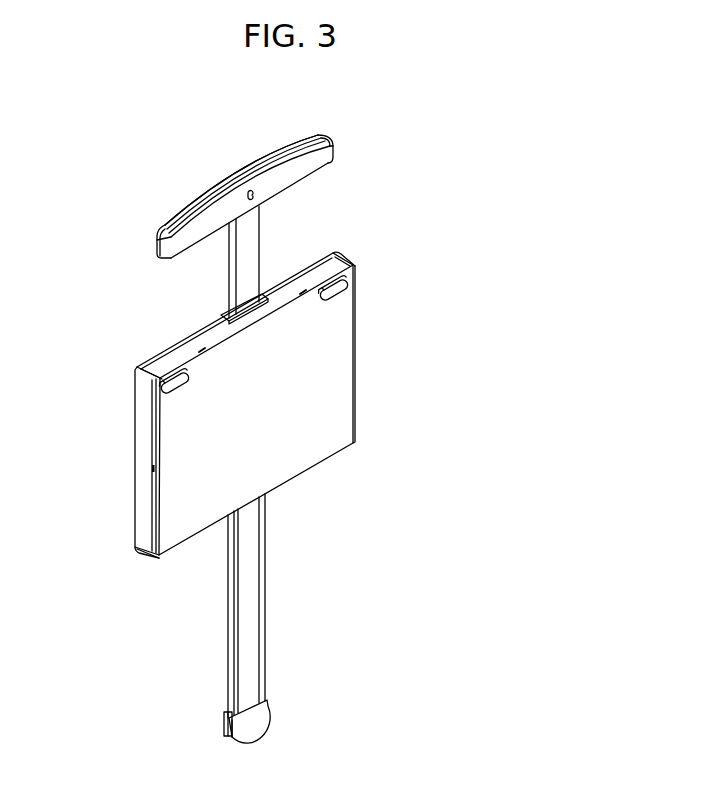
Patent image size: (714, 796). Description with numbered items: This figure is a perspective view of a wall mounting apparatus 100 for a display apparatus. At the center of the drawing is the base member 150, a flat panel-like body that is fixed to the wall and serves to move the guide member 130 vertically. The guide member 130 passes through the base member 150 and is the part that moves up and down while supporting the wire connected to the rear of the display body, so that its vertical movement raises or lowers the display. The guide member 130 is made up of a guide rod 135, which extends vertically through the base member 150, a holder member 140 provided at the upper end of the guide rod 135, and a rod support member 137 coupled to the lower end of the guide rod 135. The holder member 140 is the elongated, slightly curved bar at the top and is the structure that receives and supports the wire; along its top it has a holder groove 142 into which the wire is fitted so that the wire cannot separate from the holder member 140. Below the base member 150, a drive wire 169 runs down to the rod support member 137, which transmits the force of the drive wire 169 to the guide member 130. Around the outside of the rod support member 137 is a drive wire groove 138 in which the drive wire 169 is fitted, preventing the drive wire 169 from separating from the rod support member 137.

The wall mounting apparatus 100 is at (294, 454).
The guide member 130 is at (229, 494).
The guide rod 135 is at (253, 260).
The rod support member 137 is at (262, 720).
The drive wire groove 138 is at (225, 732).
The holder member 140 is at (318, 159).
The holder groove 142 is at (212, 190).
The base member 150 is at (131, 446).
The drive wire 169 is at (267, 563).